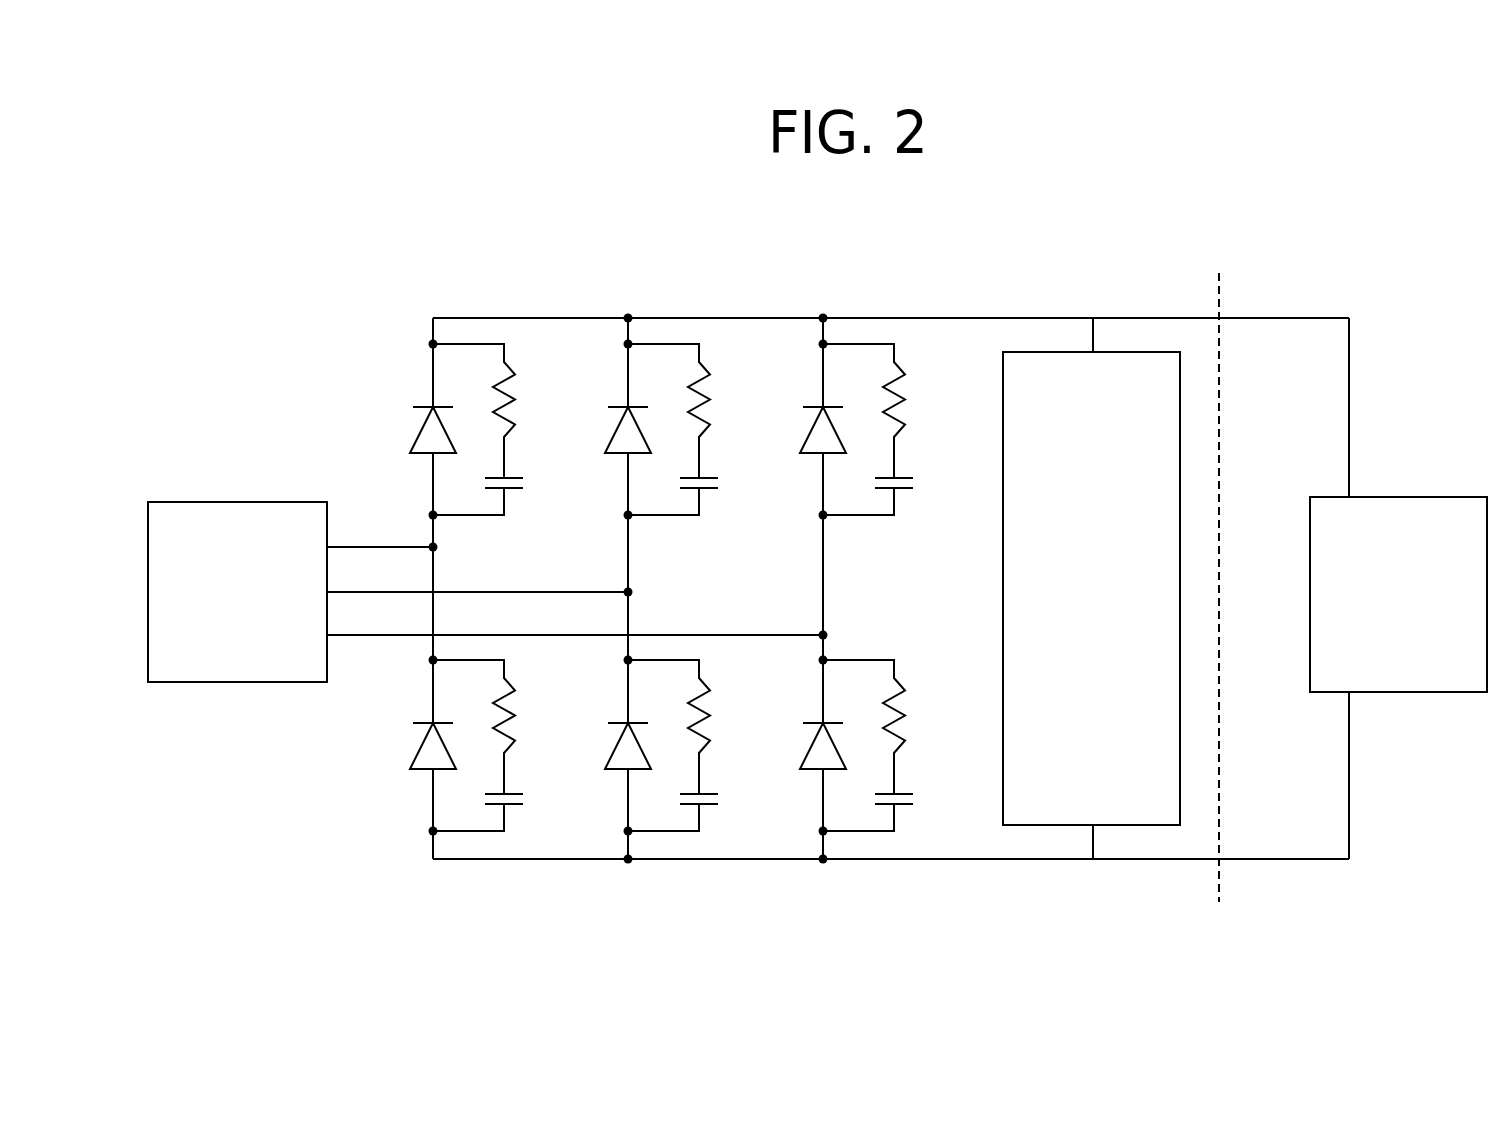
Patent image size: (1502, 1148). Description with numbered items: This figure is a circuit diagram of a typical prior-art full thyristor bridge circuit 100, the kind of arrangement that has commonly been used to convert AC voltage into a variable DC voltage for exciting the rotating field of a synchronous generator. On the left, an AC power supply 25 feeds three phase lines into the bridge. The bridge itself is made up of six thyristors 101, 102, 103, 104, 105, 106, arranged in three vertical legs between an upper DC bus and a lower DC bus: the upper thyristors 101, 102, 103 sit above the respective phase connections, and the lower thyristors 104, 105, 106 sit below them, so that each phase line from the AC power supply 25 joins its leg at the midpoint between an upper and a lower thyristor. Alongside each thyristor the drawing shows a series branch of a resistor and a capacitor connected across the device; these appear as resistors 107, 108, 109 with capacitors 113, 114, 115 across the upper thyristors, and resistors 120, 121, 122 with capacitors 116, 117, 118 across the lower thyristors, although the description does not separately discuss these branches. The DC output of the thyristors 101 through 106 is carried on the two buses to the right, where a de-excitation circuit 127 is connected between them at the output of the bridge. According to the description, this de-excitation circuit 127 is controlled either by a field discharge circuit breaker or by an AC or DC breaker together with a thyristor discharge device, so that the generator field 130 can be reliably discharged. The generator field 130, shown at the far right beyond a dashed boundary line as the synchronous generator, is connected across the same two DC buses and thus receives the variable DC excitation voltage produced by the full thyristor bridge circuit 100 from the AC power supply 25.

The full thyristor bridge circuit 100 is at (718, 266).
The AC power supply 25 is at (200, 502).
The thyristor 101 is at (408, 430).
The thyristor 102 is at (604, 430).
The thyristor 103 is at (799, 430).
The thyristor 104 is at (407, 746).
The thyristor 105 is at (602, 746).
The thyristor 106 is at (797, 746).
The resistor 107 is at (503, 411).
The resistor 108 is at (697, 411).
The resistor 109 is at (893, 411).
The capacitor 113 is at (503, 491).
The capacitor 114 is at (697, 491).
The capacitor 115 is at (893, 491).
The capacitor 116 is at (503, 807).
The capacitor 117 is at (697, 807).
The capacitor 118 is at (893, 807).
The resistor 120 is at (502, 727).
The resistor 121 is at (697, 727).
The resistor 122 is at (893, 727).
The de-excitation circuit 127 is at (1141, 352).
The generator field 130 is at (1393, 497).